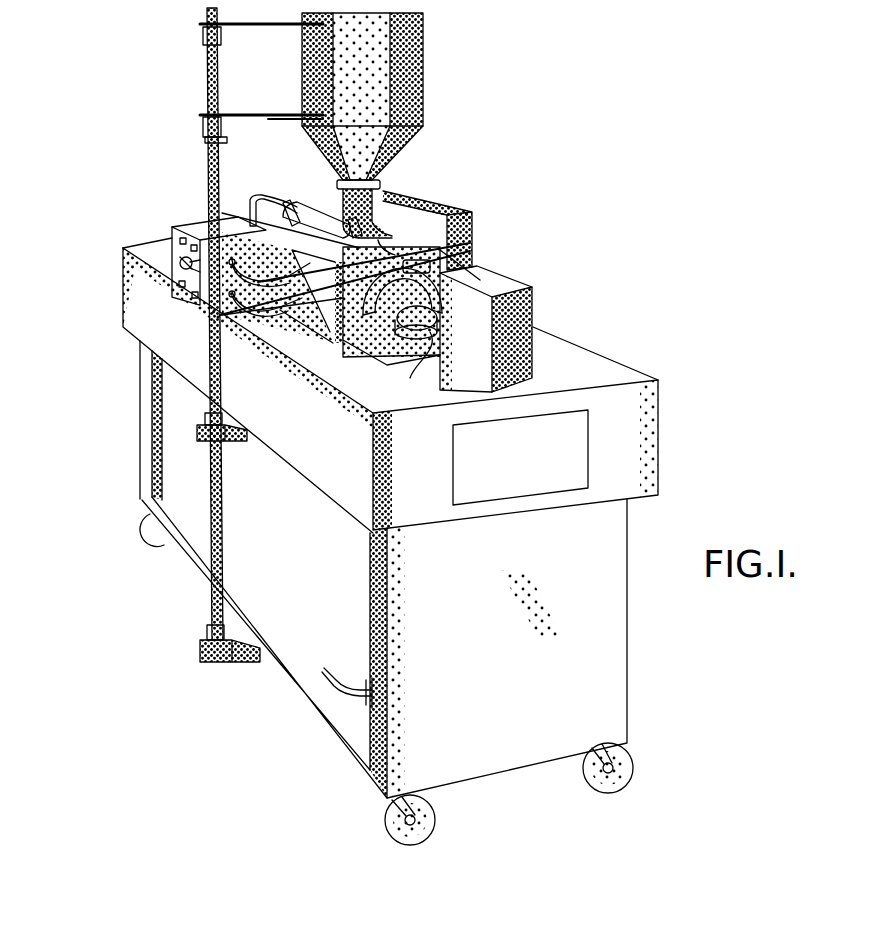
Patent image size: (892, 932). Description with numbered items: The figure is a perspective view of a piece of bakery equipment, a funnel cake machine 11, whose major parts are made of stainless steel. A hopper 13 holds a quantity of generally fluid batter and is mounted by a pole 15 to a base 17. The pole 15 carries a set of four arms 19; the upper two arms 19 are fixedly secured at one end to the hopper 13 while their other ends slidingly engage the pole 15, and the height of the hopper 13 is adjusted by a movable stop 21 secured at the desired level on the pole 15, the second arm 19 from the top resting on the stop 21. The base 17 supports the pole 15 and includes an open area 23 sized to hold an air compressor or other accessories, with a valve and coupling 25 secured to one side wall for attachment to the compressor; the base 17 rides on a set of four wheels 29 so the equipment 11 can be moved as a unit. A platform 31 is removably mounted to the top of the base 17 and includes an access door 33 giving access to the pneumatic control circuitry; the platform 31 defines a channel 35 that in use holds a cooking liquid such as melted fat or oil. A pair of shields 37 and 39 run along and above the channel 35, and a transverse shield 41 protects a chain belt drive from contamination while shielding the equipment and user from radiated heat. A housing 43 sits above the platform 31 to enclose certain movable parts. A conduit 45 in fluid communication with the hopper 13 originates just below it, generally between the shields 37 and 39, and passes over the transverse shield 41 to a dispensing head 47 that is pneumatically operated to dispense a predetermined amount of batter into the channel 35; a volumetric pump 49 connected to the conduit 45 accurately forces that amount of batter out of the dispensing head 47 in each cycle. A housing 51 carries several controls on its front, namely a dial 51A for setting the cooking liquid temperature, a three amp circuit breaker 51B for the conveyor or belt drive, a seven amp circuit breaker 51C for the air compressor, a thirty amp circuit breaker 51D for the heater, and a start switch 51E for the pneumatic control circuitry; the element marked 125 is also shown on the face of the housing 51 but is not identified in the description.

The funnel cake machine 11 is at (502, 135).
The hopper 13 is at (367, 85).
The pole 15 is at (207, 86).
The base 17 is at (524, 661).
The arms 19 is at (268, 113).
The movable stop 21 is at (205, 140).
The open area 23 is at (194, 512).
The valve and coupling 25 is at (350, 660).
The wheels 29 is at (168, 549).
The platform 31 is at (307, 437).
The access door 33 is at (524, 481).
The channel 35 is at (371, 341).
The shield 37 is at (326, 316).
The shield 39 is at (470, 233).
The transverse shield 41 is at (402, 289).
The housing 43 is at (497, 276).
The conduit 45 is at (343, 193).
The dispensing head 47 is at (410, 378).
The volumetric pump 49 is at (330, 206).
The housing 51 is at (197, 226).
The dial 51A is at (180, 263).
The three amp circuit breaker 51B is at (180, 240).
The seven amp circuit breaker 51C is at (190, 248).
The thirty amp circuit breaker 51D is at (179, 284).
The start switch 51E is at (200, 306).
The indicator 125 is at (194, 292).